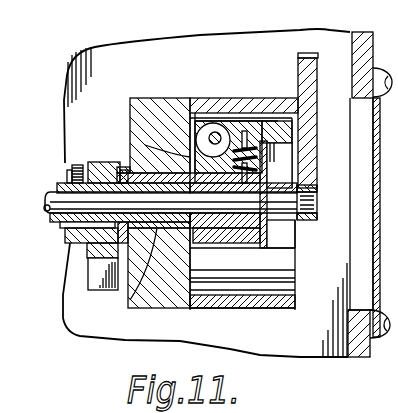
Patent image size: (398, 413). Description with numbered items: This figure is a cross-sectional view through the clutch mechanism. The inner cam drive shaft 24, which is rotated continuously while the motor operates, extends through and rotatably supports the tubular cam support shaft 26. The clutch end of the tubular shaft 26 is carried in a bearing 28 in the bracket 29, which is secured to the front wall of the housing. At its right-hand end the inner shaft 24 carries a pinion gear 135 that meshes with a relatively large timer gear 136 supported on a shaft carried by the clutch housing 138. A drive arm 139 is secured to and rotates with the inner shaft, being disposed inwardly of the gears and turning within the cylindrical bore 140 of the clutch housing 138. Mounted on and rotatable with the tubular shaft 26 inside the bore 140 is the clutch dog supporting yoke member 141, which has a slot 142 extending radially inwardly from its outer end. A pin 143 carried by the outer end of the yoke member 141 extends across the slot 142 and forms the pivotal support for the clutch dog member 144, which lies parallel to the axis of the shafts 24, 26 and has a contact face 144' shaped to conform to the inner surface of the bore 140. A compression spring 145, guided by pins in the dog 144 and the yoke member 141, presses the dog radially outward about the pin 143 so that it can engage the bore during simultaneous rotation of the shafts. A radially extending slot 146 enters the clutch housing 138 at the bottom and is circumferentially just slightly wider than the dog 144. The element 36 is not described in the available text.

The inner cam drive shaft 24 is at (50, 207).
The tubular cam support shaft 26 is at (58, 183).
The bearing 28 is at (128, 295).
The bracket 29 is at (128, 117).
The sleeve 36 is at (92, 270).
The pinion gear 135 is at (312, 197).
The timer gear 136 is at (298, 62).
The clutch housing 138 is at (208, 124).
The drive arm 139 is at (278, 165).
The cylindrical bore 140 is at (267, 275).
The clutch dog supporting yoke member 141 is at (207, 240).
The slot 142 is at (130, 143).
The pin 143 is at (204, 122).
The clutch dog member 144 is at (250, 124).
The contact face 144' is at (304, 184).
The compression spring 145 is at (236, 158).
The radially extending slot 146 is at (283, 310).